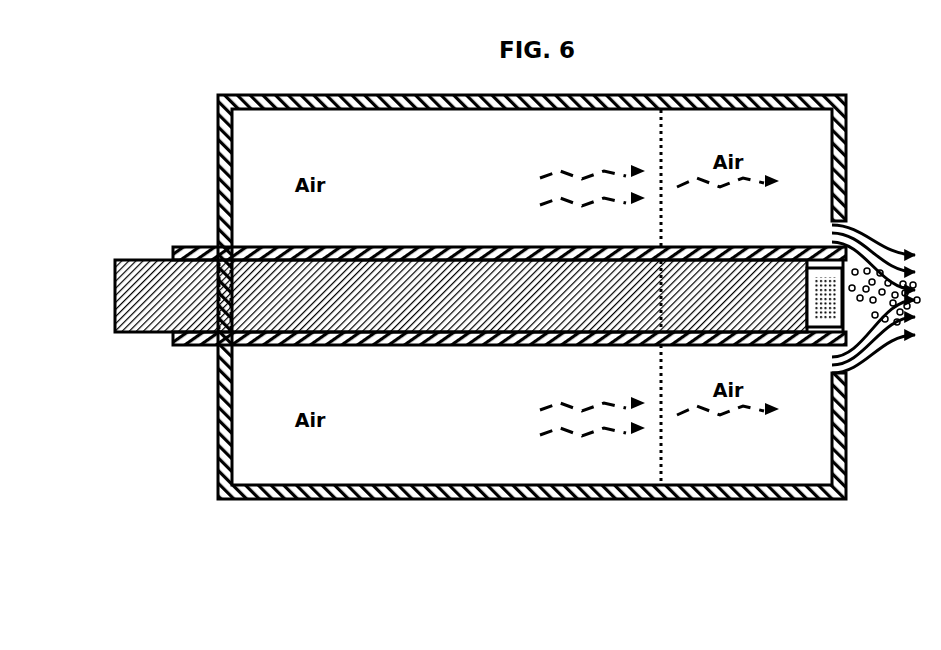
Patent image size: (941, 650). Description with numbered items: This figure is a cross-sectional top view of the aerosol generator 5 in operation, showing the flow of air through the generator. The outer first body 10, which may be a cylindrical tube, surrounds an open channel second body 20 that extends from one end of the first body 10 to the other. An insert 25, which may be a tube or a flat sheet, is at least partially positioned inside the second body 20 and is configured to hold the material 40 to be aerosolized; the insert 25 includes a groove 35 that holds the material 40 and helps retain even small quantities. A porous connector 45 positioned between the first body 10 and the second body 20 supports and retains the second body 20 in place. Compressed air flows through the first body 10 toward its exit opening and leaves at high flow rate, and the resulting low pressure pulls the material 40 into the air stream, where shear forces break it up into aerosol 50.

The aerosol generator 5 is at (96, 124).
The first body 10 is at (628, 90).
The second body 20 is at (173, 252).
The insert 25 is at (130, 335).
The groove 35 is at (803, 320).
The material 40 is at (806, 270).
The porous connector 45 is at (662, 135).
The aerosol 50 is at (868, 309).